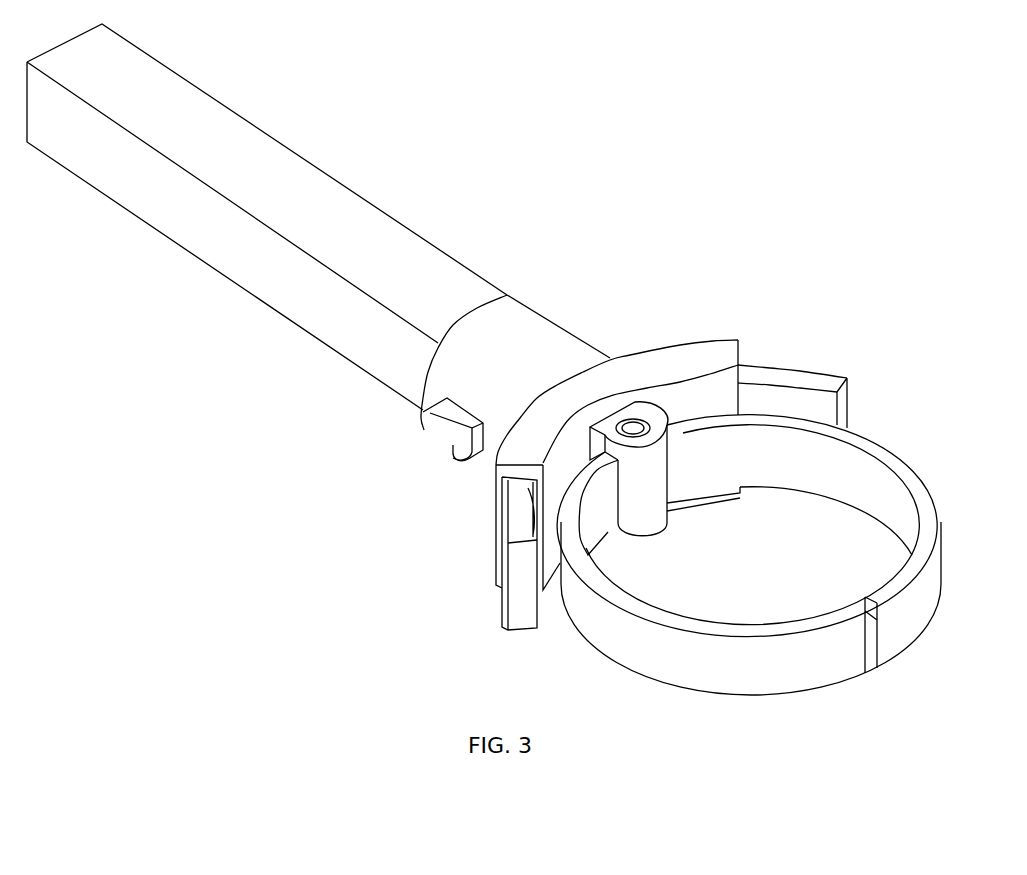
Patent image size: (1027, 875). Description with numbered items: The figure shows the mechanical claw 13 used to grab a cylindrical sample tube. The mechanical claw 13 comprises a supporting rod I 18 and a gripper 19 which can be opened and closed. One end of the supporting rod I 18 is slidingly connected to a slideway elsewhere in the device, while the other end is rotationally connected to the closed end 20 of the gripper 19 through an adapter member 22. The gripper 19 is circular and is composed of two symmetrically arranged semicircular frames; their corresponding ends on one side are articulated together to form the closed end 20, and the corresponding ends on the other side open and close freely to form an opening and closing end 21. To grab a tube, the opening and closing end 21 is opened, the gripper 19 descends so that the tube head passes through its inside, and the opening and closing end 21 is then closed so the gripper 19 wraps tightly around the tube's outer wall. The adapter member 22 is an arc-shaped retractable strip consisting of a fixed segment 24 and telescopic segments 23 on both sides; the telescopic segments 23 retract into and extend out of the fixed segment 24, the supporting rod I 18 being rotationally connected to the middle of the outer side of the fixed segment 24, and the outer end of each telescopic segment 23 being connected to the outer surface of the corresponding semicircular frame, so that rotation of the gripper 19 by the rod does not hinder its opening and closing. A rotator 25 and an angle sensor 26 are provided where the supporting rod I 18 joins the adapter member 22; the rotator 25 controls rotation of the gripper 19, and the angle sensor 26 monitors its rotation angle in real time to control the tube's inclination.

The supporting rod I 18 is at (263, 152).
The rotator 25 is at (515, 330).
The angle sensor 26 is at (452, 425).
The mechanical claw 13 is at (693, 363).
The fixed segment 24 is at (725, 352).
The telescopic segments 23 is at (807, 382).
The gripper 19 is at (865, 452).
The opening and closing end 21 is at (865, 603).
The closed end 20 is at (644, 450).
The adapter member 22 is at (500, 458).